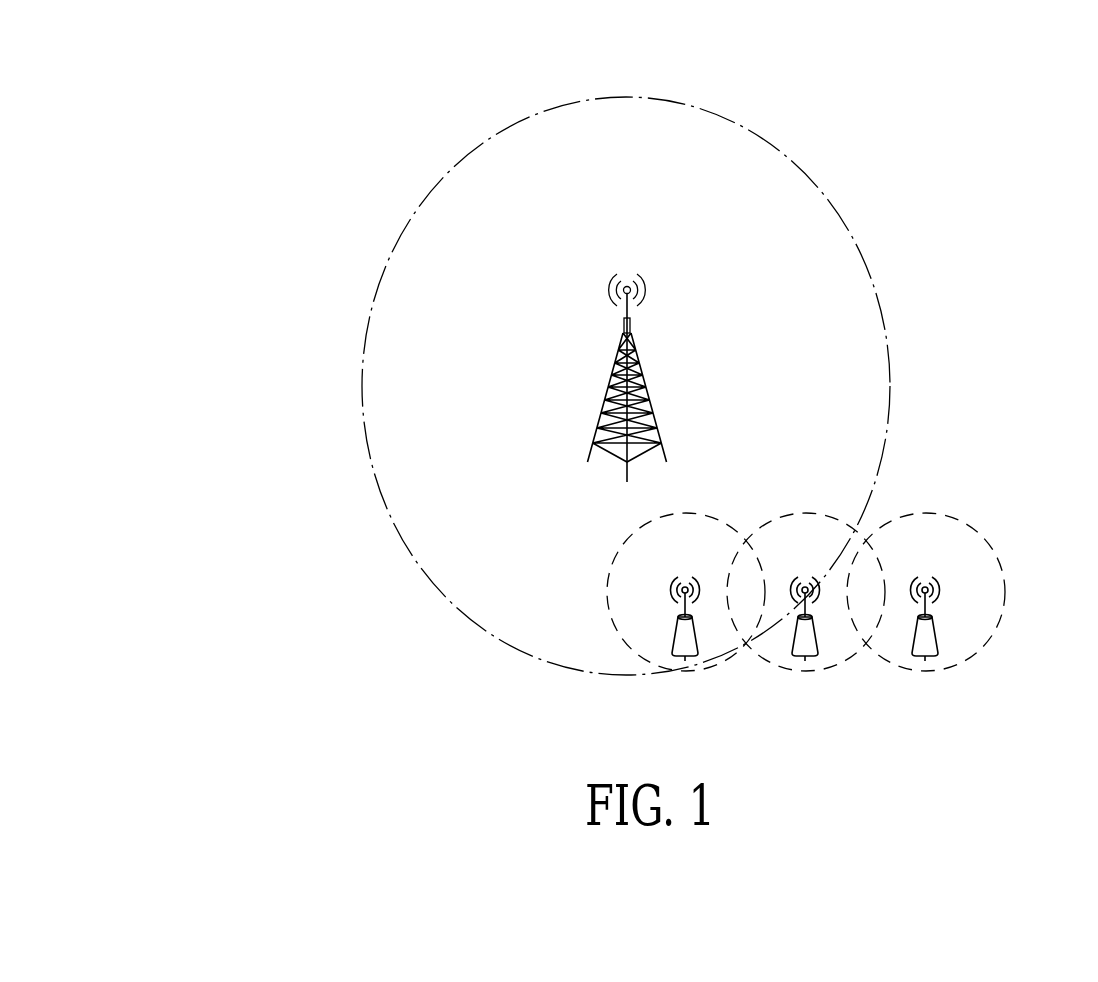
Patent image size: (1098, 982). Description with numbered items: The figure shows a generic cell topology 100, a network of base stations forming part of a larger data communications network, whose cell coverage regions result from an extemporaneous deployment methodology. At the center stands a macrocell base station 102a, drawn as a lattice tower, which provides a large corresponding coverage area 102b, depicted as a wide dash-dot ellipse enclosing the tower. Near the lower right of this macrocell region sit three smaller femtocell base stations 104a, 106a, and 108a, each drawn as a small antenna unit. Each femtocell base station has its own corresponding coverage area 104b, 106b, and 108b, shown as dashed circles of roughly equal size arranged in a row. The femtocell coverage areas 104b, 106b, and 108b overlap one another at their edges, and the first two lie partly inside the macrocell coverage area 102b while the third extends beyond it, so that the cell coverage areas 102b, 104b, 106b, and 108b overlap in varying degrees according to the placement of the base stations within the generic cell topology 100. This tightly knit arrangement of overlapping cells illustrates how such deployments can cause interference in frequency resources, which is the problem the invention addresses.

The generic cell topology 100 is at (257, 100).
The macrocell base station 102a is at (610, 382).
The coverage area 102b is at (470, 150).
The femtocell base station 104a is at (687, 661).
The coverage area 104b is at (620, 545).
The femtocell base station 106a is at (807, 661).
The coverage area 106b is at (812, 510).
The femtocell base station 108a is at (927, 661).
The coverage area 108b is at (981, 531).